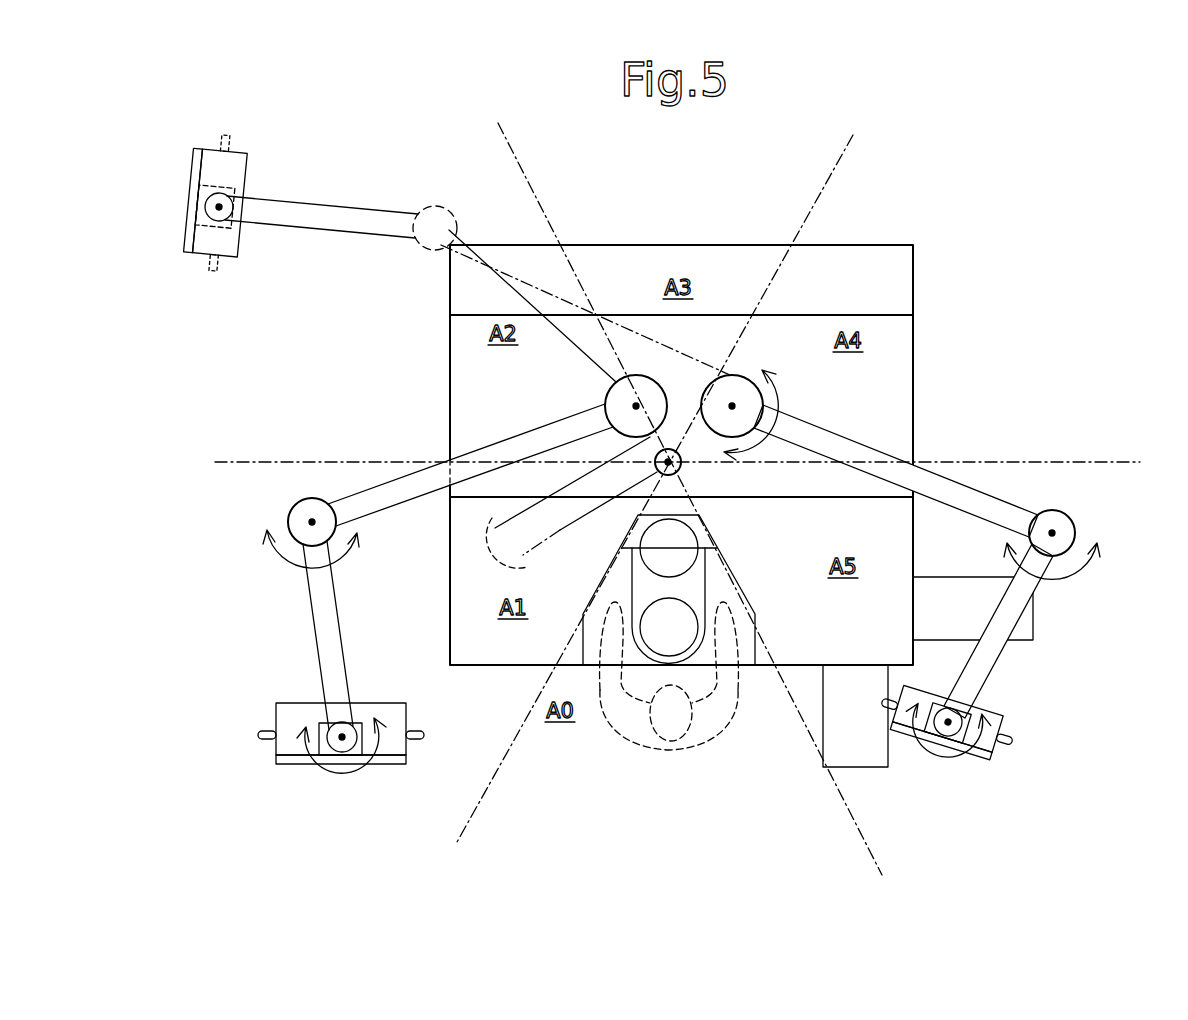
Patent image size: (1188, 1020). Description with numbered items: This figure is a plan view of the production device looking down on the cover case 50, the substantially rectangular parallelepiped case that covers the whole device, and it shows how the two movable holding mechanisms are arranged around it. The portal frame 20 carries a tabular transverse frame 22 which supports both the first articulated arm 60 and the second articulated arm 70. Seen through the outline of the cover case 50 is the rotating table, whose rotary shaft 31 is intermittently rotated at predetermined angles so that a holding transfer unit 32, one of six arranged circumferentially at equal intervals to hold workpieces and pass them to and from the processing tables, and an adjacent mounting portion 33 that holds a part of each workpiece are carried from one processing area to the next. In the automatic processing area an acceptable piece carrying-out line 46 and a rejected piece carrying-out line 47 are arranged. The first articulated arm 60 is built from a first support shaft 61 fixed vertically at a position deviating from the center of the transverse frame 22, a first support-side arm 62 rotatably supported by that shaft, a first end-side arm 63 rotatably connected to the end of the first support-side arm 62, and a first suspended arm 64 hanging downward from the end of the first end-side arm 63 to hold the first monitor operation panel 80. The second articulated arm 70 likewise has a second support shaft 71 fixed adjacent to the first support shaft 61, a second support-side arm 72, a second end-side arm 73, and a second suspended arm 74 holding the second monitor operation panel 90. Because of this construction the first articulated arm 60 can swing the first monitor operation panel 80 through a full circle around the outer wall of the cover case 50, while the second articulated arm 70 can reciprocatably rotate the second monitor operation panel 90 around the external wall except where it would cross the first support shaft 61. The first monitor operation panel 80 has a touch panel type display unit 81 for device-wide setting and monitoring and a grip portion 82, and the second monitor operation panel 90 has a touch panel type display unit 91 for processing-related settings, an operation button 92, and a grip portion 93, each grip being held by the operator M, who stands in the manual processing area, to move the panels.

The portal frame 20 is at (766, 455).
The transverse frame 22 is at (1008, 313).
The rotary shaft 31 is at (681, 464).
The holding transfer unit 32 is at (693, 601).
The mounting portion 33 is at (688, 540).
The acceptable piece carrying-out line 46 is at (870, 767).
The rejected piece carrying-out line 47 is at (1030, 624).
The cover case 50 is at (766, 404).
The first articulated arm 60 is at (434, 542).
The first support shaft 61 is at (623, 392).
The first support-side arm 62 is at (510, 438).
The first end-side arm 63 is at (300, 595).
The first suspended arm 64 is at (343, 722).
The second articulated arm 70 is at (440, 192).
The second support shaft 71 is at (738, 392).
The second support-side arm 72 is at (845, 437).
The second end-side arm 73 is at (1027, 592).
The second suspended arm 74 is at (901, 750).
The first monitor operation panel 80 is at (280, 736).
The touch panel type display unit 81 is at (304, 779).
The grip portion 82 is at (262, 735).
The second monitor operation panel 90 is at (246, 137).
The touch panel type display unit 91 is at (945, 766).
The operation button 92 is at (941, 741).
The grip portion 93 is at (947, 721).
The operator M is at (668, 756).